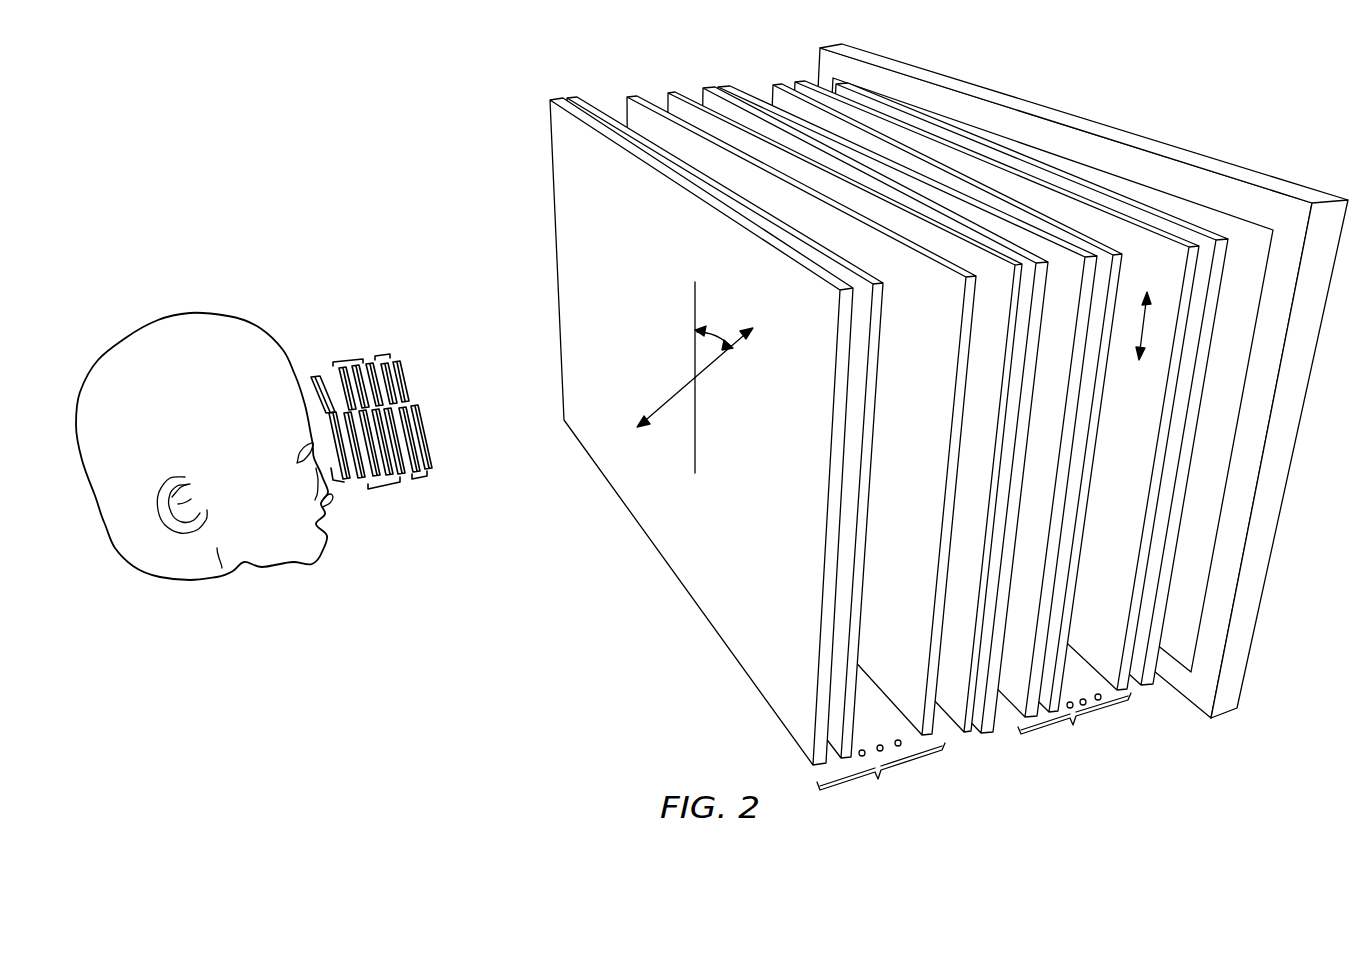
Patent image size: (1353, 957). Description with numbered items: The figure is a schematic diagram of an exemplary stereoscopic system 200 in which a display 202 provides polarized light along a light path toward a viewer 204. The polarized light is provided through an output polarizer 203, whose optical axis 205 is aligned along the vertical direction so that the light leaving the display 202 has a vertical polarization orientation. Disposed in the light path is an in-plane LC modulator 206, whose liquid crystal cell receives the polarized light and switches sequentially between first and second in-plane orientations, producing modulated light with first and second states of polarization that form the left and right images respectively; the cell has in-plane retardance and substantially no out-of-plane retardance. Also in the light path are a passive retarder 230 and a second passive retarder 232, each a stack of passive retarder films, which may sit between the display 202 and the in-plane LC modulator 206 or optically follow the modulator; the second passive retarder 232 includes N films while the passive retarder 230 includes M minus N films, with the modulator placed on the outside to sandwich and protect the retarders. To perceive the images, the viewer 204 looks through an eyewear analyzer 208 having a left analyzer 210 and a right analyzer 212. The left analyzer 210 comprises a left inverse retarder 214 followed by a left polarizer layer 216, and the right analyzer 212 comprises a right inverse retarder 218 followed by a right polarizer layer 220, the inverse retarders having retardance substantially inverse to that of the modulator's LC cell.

The stereoscopic system 200 is at (296, 146).
The display 202 is at (1238, 194).
The output polarizer 203 is at (1072, 193).
The viewer 204 is at (168, 318).
The optical axis 205 is at (1144, 312).
The in-plane LC modulator 206 is at (675, 101).
The eyewear analyzer 208 is at (443, 441).
The left analyzer 210 is at (405, 358).
The right analyzer 212 is at (421, 404).
The left inverse retarder 214 is at (383, 353).
The left polarizer layer 216 is at (312, 372).
The right inverse retarder 218 is at (392, 488).
The right polarizer layer 220 is at (337, 483).
The passive retarder 230 is at (763, 466).
The second passive retarder 232 is at (899, 430).